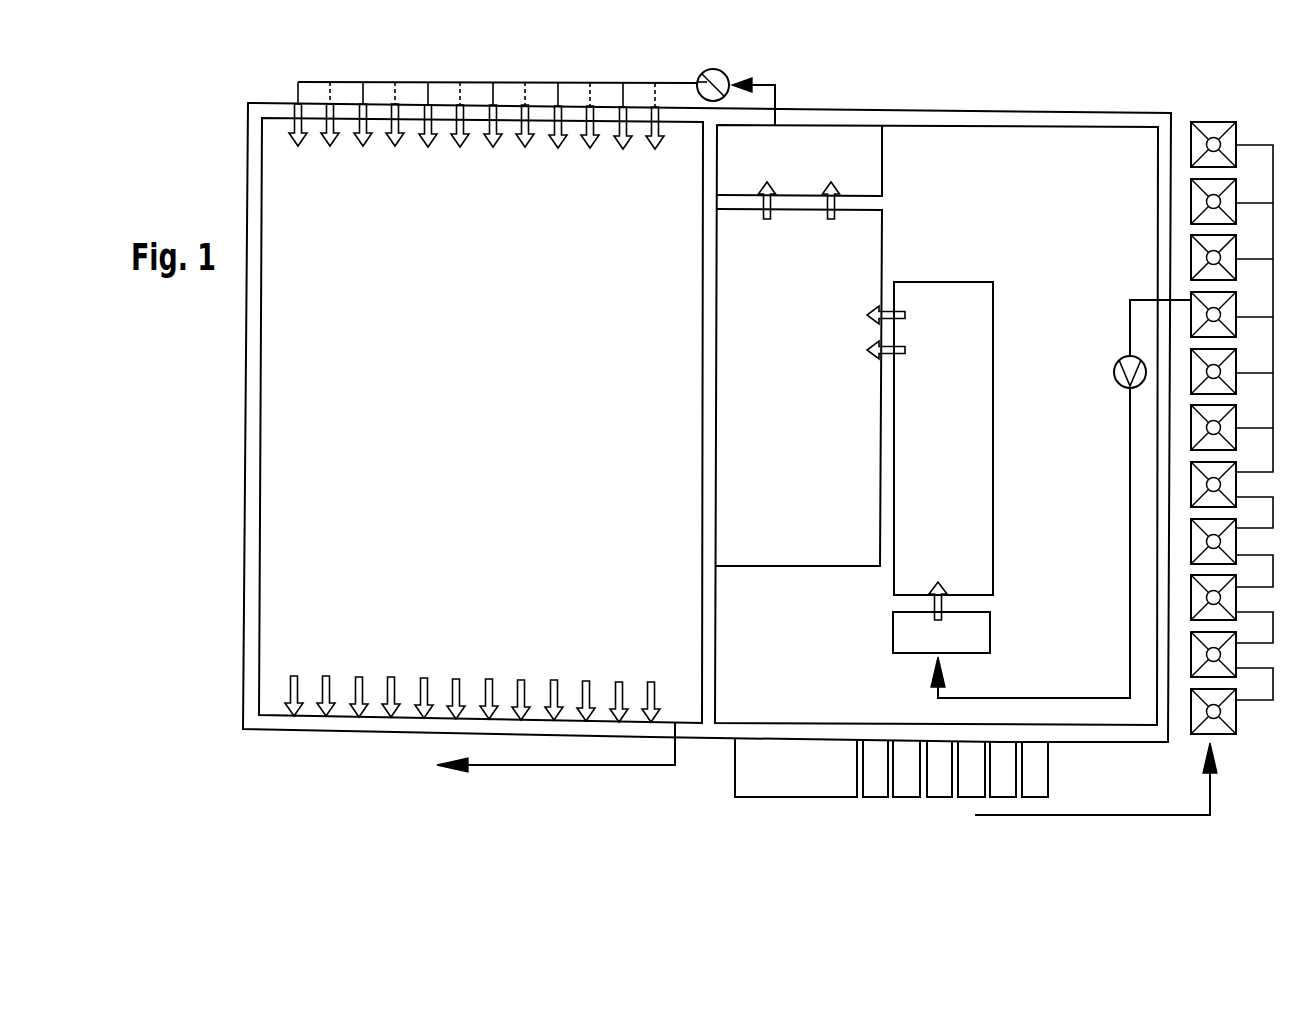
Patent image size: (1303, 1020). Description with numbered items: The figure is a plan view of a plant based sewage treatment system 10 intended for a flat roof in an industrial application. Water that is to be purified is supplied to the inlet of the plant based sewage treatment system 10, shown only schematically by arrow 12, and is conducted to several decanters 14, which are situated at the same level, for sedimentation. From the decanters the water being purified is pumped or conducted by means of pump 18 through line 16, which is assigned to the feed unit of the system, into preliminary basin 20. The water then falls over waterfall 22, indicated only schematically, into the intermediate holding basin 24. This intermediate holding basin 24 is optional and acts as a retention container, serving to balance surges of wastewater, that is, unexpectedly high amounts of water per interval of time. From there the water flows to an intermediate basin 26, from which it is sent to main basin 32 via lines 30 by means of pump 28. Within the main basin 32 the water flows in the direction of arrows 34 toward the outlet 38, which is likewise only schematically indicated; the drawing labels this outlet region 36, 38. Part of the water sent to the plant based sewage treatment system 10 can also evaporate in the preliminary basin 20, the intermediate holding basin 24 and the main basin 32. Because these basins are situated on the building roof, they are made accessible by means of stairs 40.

The plant based sewage treatment system 10 is at (1051, 90).
The arrow 12 is at (1118, 815).
The decanters 14 is at (1213, 96).
The line 16 is at (1128, 313).
The pump 18 is at (1119, 360).
The preliminary basin 20 is at (955, 533).
The waterfall 22 is at (892, 313).
The intermediate holding basin 24 is at (790, 360).
The intermediate basin 26 is at (837, 140).
The pump 28 is at (715, 70).
The lines 30 is at (410, 82).
The main basin 32 is at (470, 462).
The arrows 34 is at (560, 120).
The outlet 36 is at (556, 769).
The outlet 38 is at (617, 768).
The stairs 40 is at (940, 788).